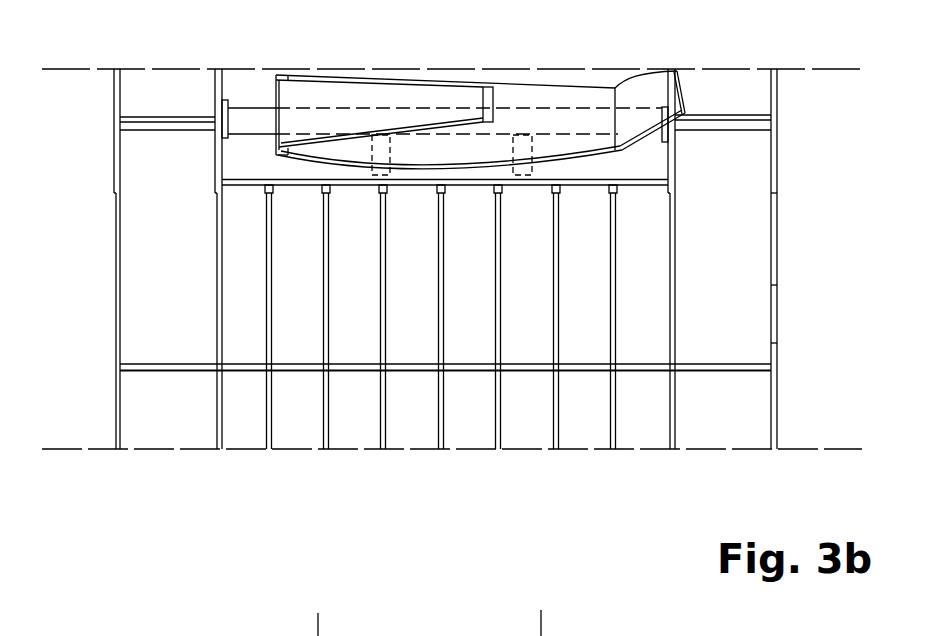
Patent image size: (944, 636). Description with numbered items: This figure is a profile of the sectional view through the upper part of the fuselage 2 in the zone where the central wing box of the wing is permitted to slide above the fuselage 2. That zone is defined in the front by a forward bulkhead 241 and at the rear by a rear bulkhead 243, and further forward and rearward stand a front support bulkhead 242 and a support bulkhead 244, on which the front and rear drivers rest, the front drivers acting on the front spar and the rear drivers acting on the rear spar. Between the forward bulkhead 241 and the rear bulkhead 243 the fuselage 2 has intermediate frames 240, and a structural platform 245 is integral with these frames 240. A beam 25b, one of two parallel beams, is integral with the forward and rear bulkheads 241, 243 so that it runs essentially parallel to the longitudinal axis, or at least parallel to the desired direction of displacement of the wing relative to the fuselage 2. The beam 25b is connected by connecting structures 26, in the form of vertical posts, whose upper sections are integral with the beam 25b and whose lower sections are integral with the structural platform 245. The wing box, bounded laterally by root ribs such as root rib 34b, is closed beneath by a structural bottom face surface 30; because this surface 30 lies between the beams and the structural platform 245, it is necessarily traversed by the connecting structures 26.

The fuselage 2 is at (790, 295).
The beam 25b is at (253, 113).
The root rib 34b is at (568, 100).
The structural platform 245 is at (243, 189).
The connecting structure 26 is at (378, 152).
The structural bottom face surface 30 is at (598, 157).
The frame 240 is at (330, 396).
The forward bulkhead 241 is at (215, 396).
The front support bulkhead 242 is at (118, 396).
The rear bulkhead 243 is at (667, 413).
The support bulkhead 244 is at (774, 410).